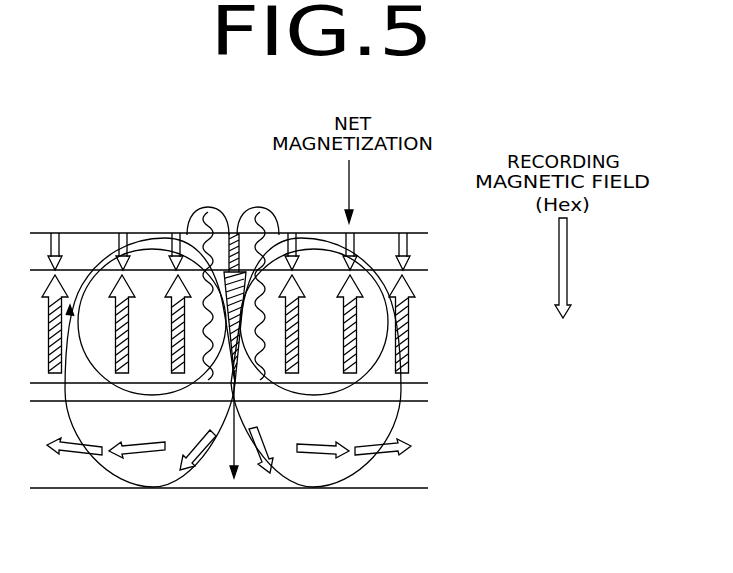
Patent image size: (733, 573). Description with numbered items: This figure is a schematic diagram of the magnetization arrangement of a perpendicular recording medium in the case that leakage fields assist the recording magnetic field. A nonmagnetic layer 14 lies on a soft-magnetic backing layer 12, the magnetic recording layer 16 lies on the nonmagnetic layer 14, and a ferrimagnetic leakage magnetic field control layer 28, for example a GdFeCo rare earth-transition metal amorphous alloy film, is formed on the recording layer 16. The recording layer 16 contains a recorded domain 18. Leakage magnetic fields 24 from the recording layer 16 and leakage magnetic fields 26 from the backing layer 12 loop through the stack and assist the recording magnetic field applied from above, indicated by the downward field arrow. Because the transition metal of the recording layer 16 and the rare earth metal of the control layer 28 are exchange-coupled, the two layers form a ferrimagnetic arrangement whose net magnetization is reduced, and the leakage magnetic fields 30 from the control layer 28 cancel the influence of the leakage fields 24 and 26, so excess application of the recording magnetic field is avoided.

The soft-magnetic backing layer 12 is at (375, 484).
The nonmagnetic layer 14 is at (414, 393).
The magnetic recording layer 16 is at (414, 328).
The recorded domain 18 is at (233, 233).
The leakage magnetic fields from the recording layer 24 is at (162, 238).
The leakage magnetic fields from the backing layer 26 is at (82, 285).
The leakage magnetic field control layer 28 is at (415, 252).
The leakage magnetic fields from the leakage magnetic field control layer 30 is at (207, 207).